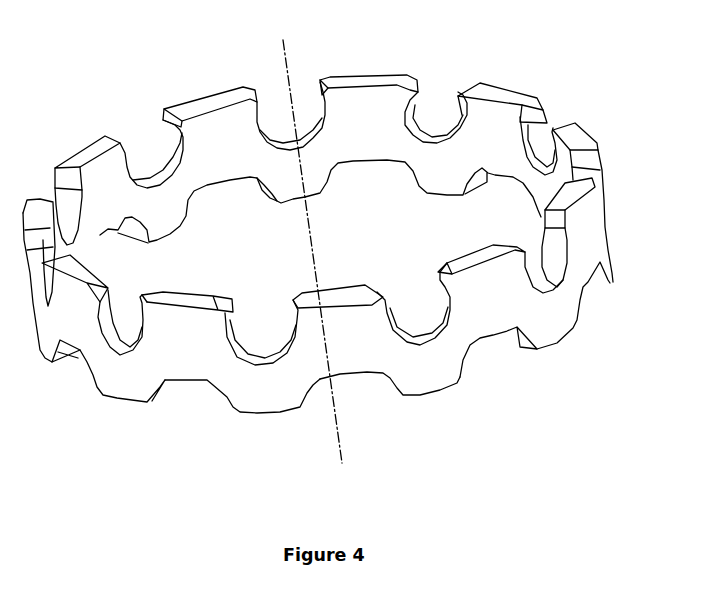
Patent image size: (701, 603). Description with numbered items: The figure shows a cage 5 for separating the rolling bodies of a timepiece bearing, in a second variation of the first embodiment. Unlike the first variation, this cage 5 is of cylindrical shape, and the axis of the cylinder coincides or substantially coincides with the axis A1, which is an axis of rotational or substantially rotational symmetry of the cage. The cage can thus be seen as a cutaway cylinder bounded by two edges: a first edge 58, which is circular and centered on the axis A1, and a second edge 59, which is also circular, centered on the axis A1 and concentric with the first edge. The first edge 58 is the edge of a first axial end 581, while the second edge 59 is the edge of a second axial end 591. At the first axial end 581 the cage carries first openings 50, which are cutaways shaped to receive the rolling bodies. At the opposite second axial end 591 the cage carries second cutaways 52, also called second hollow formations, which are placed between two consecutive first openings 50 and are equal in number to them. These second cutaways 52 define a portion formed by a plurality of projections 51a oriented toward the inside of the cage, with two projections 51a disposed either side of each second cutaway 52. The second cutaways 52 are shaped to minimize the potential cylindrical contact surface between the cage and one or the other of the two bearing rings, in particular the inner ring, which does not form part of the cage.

The cage 5 is at (367, 100).
The first openings 50 is at (146, 145).
The first edge 58 is at (210, 100).
The first axial end 581 is at (85, 149).
The second edge 59 is at (270, 418).
The second axial end 591 is at (125, 398).
The projections 51a is at (423, 373).
The second cutaways 52 is at (498, 348).
The axis A1 is at (317, 270).